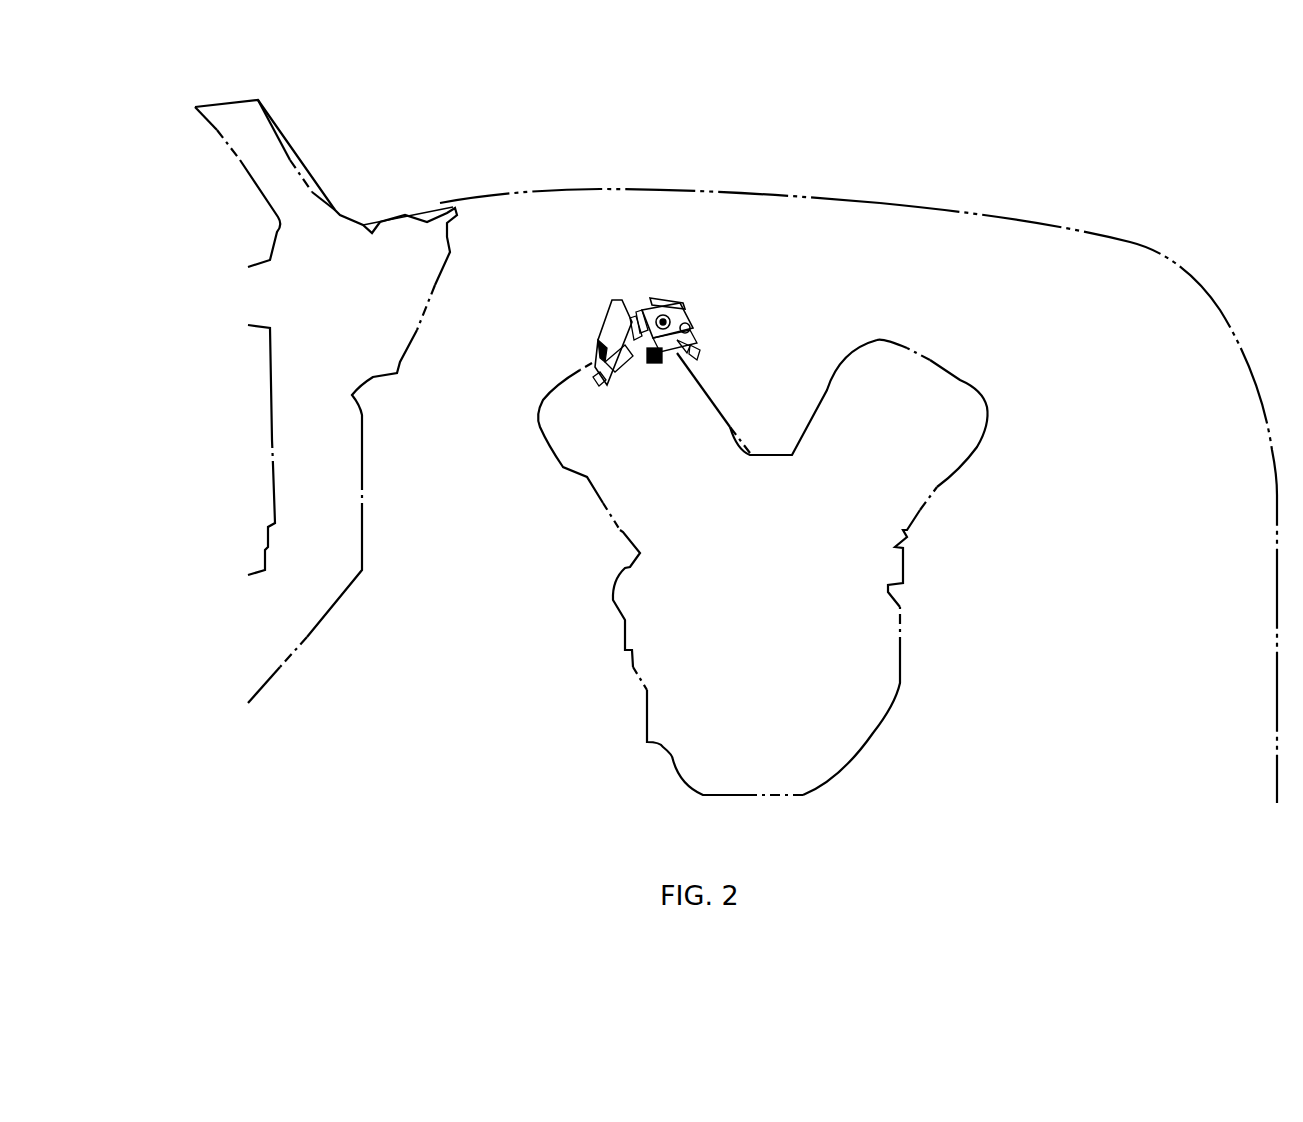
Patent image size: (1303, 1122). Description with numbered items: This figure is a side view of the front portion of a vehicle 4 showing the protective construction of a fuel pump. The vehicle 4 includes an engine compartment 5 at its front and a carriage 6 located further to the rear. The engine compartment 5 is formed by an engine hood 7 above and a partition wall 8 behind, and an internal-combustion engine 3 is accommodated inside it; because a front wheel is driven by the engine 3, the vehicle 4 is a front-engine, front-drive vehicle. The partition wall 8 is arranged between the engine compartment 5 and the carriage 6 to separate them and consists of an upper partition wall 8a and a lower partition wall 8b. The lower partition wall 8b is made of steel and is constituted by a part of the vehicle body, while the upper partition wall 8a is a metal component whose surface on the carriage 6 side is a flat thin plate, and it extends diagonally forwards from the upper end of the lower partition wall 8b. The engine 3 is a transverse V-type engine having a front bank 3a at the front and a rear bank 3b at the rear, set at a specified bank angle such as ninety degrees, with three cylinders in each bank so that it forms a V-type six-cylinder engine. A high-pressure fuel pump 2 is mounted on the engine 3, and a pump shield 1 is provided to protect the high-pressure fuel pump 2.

The pump shield 1 is at (612, 300).
The high-pressure fuel pump 2 is at (668, 300).
The internal-combustion engine 3 is at (788, 567).
The front bank 3a is at (987, 407).
The rear bank 3b is at (540, 423).
The vehicle 4 is at (1187, 271).
The engine compartment 5 is at (1066, 541).
The carriage 6 is at (192, 404).
The engine hood 7 is at (752, 193).
The partition wall 8 is at (357, 401).
The upper partition wall 8a is at (417, 330).
The lower partition wall 8b is at (362, 523).